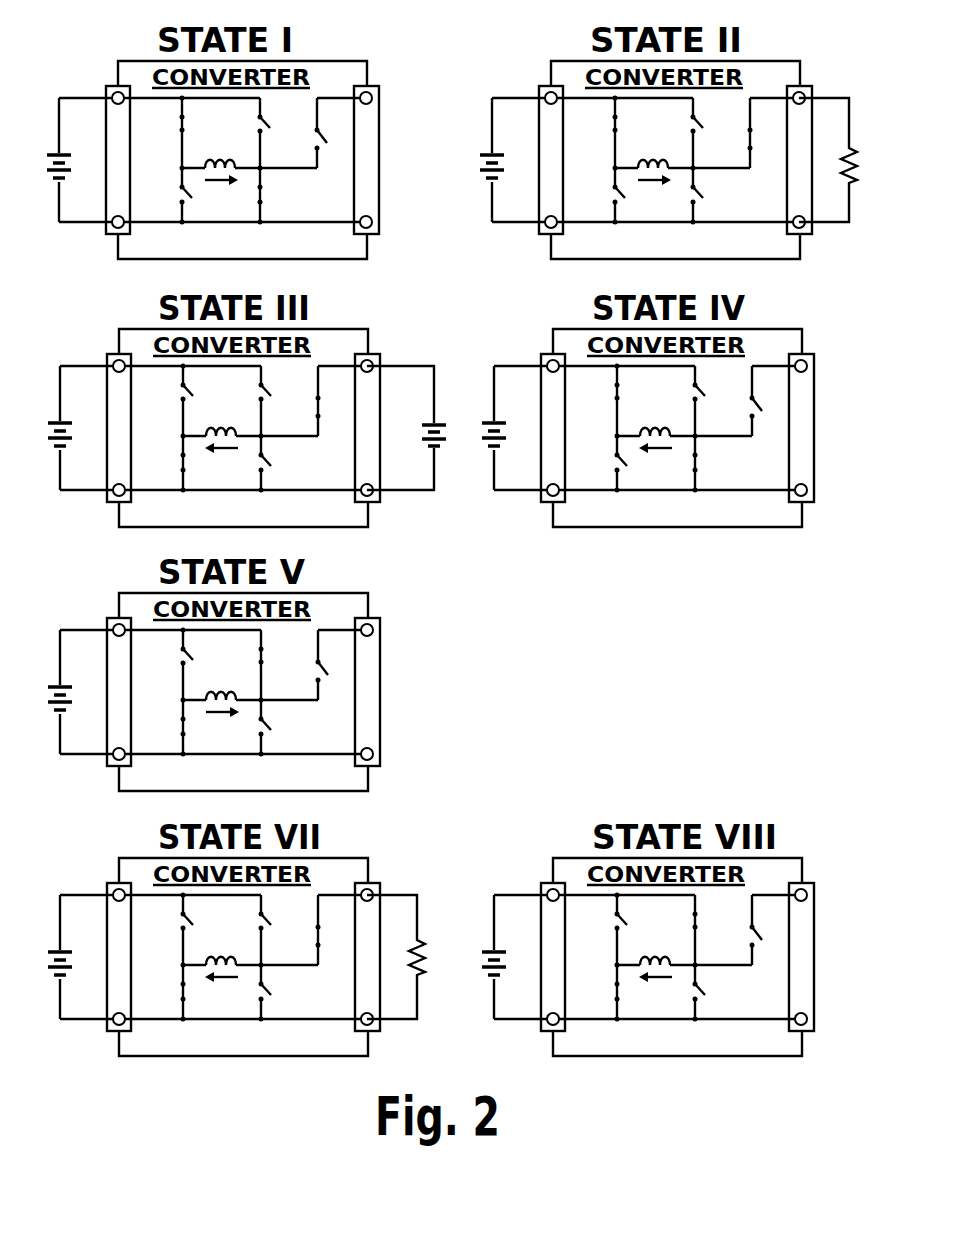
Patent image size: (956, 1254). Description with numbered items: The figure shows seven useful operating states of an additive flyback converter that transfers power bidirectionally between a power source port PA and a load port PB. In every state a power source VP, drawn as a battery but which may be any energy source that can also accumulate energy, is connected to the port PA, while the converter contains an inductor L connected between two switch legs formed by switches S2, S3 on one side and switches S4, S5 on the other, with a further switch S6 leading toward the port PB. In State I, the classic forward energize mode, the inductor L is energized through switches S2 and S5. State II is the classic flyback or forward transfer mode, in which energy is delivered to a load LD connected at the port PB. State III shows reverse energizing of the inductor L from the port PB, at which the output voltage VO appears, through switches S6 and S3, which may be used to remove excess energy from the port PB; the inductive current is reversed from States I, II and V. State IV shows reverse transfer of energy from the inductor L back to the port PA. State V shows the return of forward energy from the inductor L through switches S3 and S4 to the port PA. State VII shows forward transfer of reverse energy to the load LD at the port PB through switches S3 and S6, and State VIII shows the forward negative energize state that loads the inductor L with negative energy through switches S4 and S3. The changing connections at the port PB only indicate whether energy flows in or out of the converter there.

The power source port PA is at (108, 88).
The load port PB is at (379, 89).
The power source VP is at (58, 150).
The output voltage VO is at (406, 428).
The load LD is at (420, 148).
The switch S2 is at (180, 126).
The switch S3 is at (180, 195).
The switch S4 is at (264, 124).
The switch S5 is at (263, 195).
The switch S6 is at (316, 140).
The inductor L is at (215, 161).